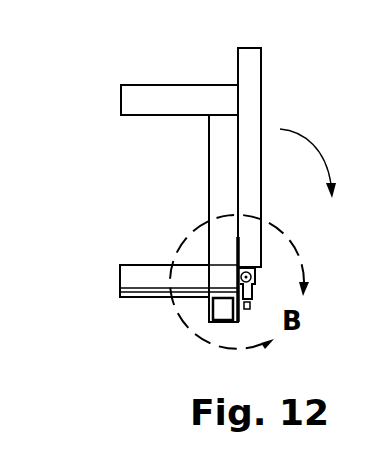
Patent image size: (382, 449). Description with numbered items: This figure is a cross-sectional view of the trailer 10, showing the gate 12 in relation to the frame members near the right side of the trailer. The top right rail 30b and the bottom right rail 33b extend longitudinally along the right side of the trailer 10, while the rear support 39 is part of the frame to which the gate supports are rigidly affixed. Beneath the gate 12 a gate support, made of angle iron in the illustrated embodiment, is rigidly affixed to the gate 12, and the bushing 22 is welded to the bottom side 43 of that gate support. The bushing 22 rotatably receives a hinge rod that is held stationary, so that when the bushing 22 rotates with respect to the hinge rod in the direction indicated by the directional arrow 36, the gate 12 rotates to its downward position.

The trailer 10 is at (128, 35).
The gate 12 is at (250, 88).
The top right rail 30b is at (138, 88).
The bottom right rail 33b is at (129, 264).
The directional arrow 36 is at (319, 163).
The rear support 39 is at (212, 296).
The bottom side 43 is at (256, 270).
The bushing 22 is at (255, 283).